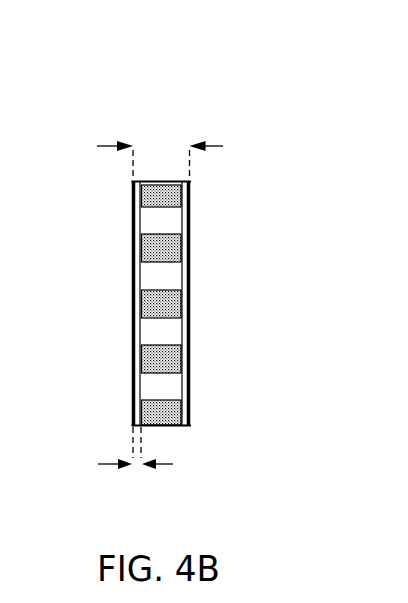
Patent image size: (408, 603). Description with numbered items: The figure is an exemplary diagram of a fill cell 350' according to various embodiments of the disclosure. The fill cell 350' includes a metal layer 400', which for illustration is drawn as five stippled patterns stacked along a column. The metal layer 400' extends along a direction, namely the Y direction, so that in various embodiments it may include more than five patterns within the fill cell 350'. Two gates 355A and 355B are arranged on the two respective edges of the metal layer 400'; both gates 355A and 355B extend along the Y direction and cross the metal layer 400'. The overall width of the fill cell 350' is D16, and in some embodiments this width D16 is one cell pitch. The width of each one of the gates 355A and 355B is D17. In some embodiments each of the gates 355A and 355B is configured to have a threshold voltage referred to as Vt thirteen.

The fill cell 350' is at (184, 259).
The metal layer 400' is at (202, 305).
The gate 355A is at (133, 425).
The gate 355B is at (187, 426).
The width of the fill cell D16 is at (160, 147).
The width of the gate D17 is at (135, 465).